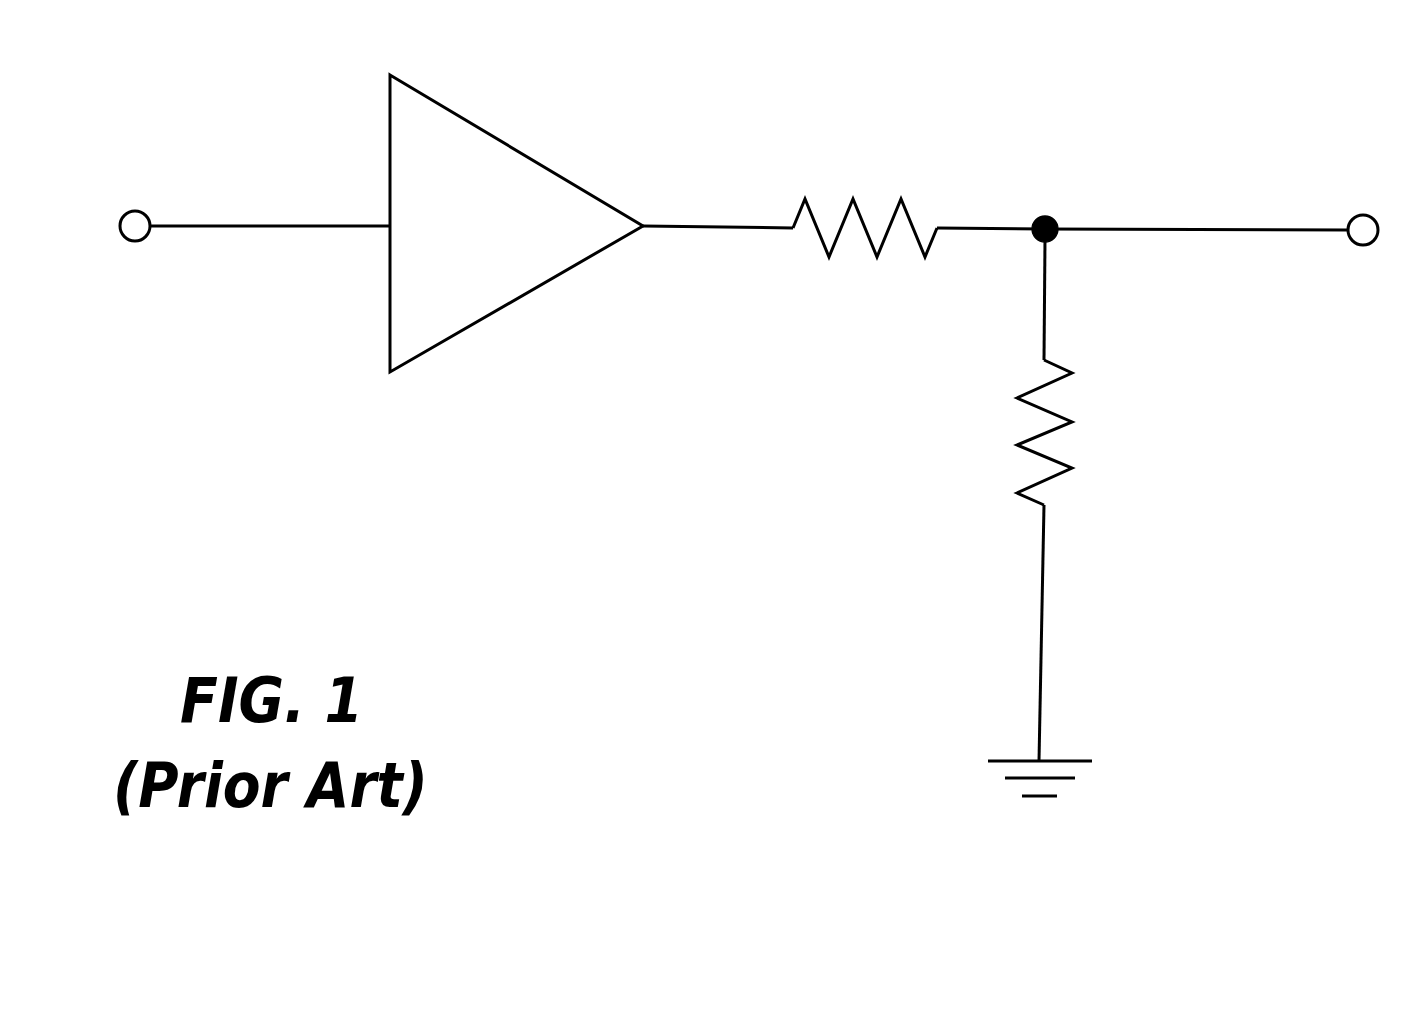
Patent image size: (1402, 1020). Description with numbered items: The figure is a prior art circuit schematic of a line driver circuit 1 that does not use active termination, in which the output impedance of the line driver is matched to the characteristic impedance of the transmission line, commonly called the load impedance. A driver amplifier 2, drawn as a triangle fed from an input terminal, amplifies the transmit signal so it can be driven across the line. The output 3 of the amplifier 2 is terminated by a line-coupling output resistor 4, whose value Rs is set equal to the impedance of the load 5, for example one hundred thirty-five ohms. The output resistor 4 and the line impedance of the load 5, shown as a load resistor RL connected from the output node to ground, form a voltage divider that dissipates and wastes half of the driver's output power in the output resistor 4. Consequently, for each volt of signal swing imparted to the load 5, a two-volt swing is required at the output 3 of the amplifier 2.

The line driver circuit 1 is at (698, 516).
The driver amplifier 2 is at (516, 223).
The output 3 is at (645, 224).
The line-coupling output resistor 4 is at (917, 243).
The load 5 is at (1052, 458).